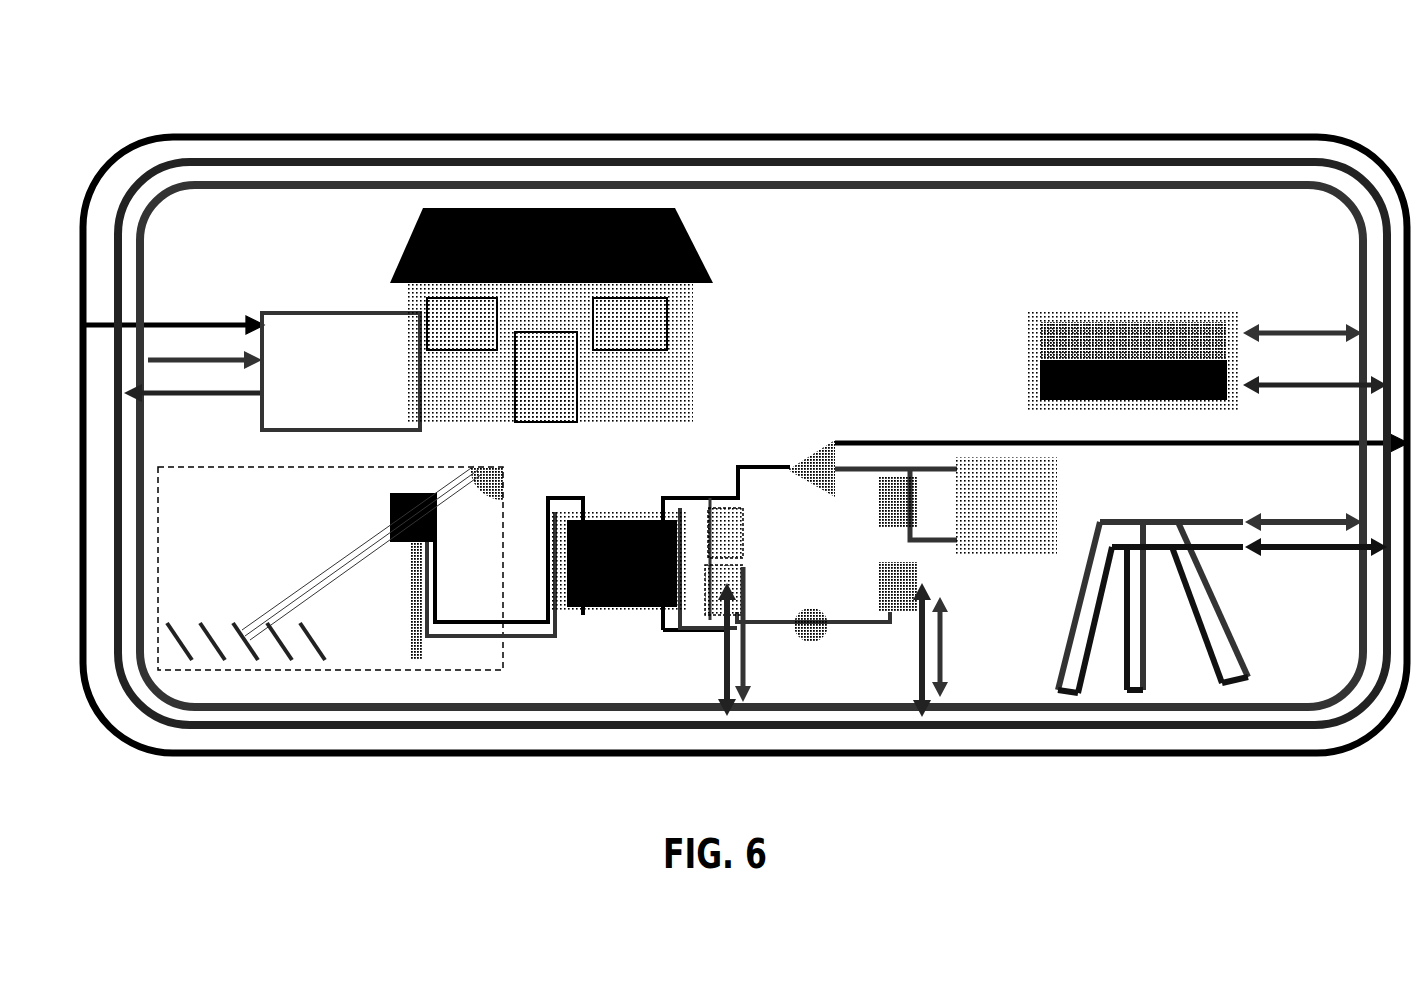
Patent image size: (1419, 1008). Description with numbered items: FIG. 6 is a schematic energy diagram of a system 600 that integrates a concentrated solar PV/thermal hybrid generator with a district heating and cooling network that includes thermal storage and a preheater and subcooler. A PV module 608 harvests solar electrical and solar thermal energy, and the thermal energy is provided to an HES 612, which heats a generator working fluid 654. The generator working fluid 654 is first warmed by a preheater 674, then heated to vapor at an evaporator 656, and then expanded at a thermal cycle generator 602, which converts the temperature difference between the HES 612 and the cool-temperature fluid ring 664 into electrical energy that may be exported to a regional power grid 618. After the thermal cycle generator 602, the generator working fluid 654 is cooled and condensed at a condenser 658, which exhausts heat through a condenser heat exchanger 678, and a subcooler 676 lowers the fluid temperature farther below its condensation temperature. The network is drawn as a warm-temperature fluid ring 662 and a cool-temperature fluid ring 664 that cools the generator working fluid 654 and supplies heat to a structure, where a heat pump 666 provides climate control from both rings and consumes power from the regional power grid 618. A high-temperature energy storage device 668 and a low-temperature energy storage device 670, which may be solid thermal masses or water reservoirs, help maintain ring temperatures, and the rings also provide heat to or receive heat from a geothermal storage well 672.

The system 600 is at (1300, 96).
The regional power grid 618 is at (908, 134).
The thermal cycle generator 602 is at (832, 440).
The PV module 608 is at (418, 494).
The HES 612 is at (605, 545).
The generator working fluid 654 is at (722, 490).
The evaporator 656 is at (743, 540).
The condenser 658 is at (897, 482).
The warm-temperature fluid ring 662 is at (960, 700).
The cool-temperature fluid ring 664 is at (855, 724).
The heat pump 666 is at (341, 371).
The high-temperature energy storage device 668 is at (1194, 362).
The low-temperature energy storage device 670 is at (1213, 380).
The geothermal storage well 672 is at (1222, 603).
The preheater 674 is at (745, 573).
The subcooler 676 is at (905, 578).
The condenser heat exchanger 678 is at (1006, 506).